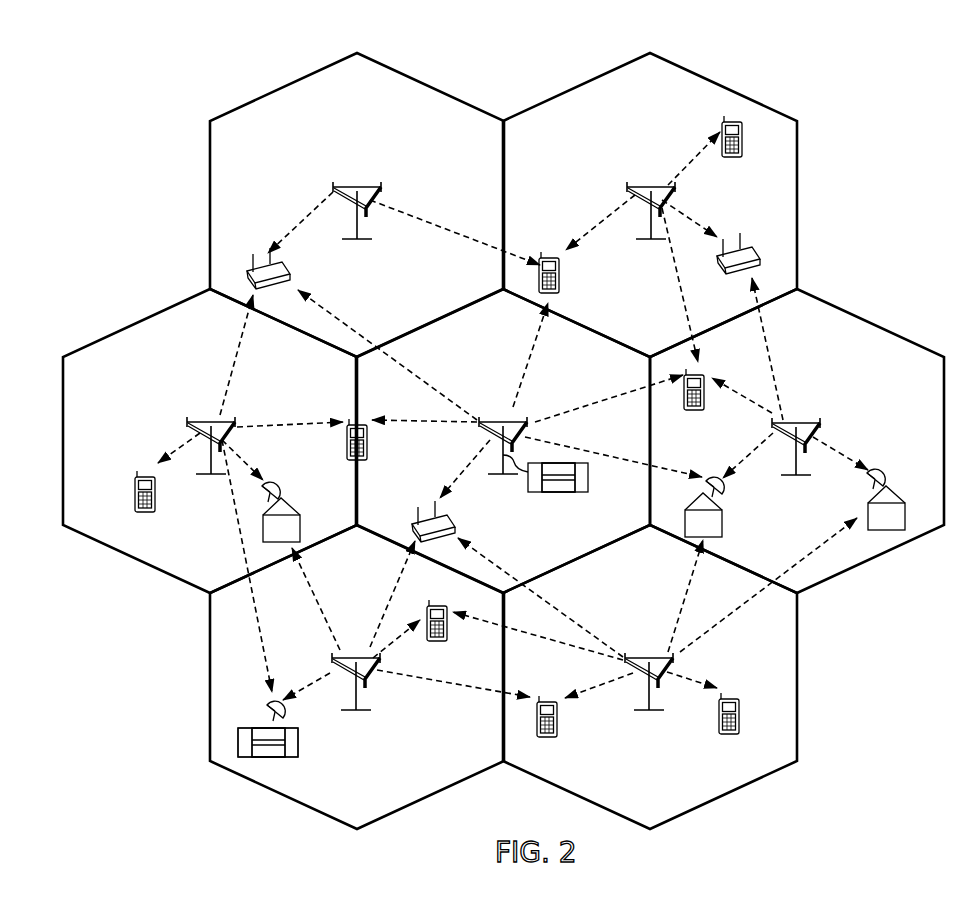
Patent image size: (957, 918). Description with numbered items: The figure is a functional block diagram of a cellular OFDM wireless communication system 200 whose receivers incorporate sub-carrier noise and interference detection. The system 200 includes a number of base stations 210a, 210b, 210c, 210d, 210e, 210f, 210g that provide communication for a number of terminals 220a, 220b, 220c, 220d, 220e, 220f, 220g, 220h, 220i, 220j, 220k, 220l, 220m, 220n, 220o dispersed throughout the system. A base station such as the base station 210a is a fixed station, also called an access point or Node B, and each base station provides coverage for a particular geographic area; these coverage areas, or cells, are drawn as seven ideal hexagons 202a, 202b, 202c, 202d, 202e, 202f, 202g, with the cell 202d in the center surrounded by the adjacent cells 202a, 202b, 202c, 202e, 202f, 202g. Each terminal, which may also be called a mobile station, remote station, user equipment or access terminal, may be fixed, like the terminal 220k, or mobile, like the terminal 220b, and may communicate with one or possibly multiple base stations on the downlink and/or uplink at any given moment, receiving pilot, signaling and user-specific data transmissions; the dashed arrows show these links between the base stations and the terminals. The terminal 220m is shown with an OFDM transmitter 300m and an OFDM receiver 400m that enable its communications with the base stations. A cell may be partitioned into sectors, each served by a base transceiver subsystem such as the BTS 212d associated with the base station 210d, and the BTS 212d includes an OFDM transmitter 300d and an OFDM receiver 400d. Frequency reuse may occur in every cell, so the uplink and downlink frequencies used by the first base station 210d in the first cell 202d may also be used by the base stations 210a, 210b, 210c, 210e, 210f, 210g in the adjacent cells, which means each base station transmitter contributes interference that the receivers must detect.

The OFDM wireless communication system 200 is at (883, 87).
The coverage area 202a is at (300, 85).
The coverage area 202b is at (740, 73).
The coverage area 202c is at (138, 322).
The coverage area 202d is at (503, 441).
The coverage area 202e is at (873, 323).
The coverage area 202f is at (210, 688).
The coverage area 202g is at (797, 686).
The base station 210a is at (352, 184).
The base station 210b is at (653, 184).
The base station 210c is at (205, 418).
The base station 210d is at (497, 418).
The base station 210e is at (799, 420).
The base station 210f is at (348, 655).
The base station 210g is at (655, 643).
The terminal 220a is at (296, 270).
The terminal 220b is at (560, 275).
The terminal 220c is at (738, 158).
The terminal 220d is at (768, 237).
The terminal 220e is at (135, 490).
The terminal 220f is at (283, 507).
The terminal 220g is at (368, 445).
The terminal 220h is at (456, 522).
The terminal 220i is at (697, 412).
The terminal 220j is at (722, 525).
The terminal 220k is at (897, 490).
The terminal 220l is at (430, 605).
The terminal 220m is at (250, 727).
The terminal 220n is at (543, 698).
The terminal 220o is at (735, 697).
The OFDM transmitter 300d is at (528, 480).
The OFDM receiver 400d is at (575, 490).
The base transceiver subsystem 212d is at (540, 495).
The OFDM transmitter 300m is at (300, 740).
The OFDM receiver 400m is at (290, 756).